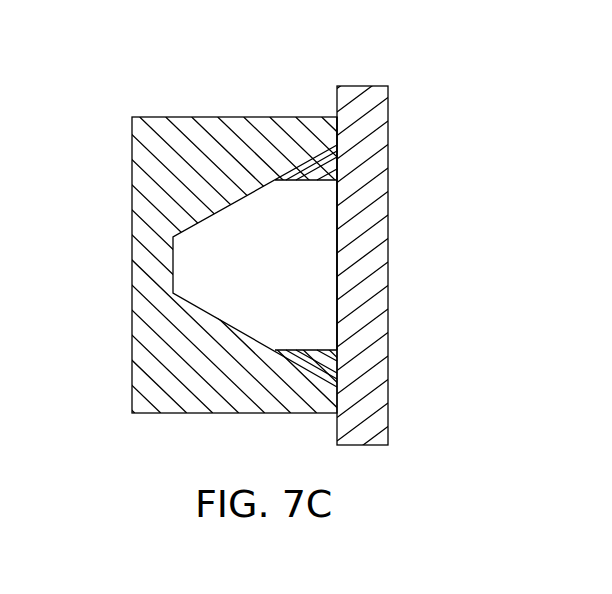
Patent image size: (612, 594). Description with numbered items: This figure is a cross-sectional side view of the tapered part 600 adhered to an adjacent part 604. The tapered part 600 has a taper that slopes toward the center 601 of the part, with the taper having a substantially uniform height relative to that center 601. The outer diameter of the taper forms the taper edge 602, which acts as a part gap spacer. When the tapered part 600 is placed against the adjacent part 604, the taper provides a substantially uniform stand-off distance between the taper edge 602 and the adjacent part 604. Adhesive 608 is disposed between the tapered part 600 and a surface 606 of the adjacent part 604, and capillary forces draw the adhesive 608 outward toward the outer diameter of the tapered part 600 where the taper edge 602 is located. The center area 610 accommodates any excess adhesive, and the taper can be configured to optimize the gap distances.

The tapered part 600 is at (188, 140).
The center 601 is at (172, 256).
The taper edge 602 is at (337, 143).
The adjacent part 604 is at (388, 143).
The surface 606 is at (337, 302).
The adhesive 608 is at (316, 164).
The center area 610 is at (315, 282).